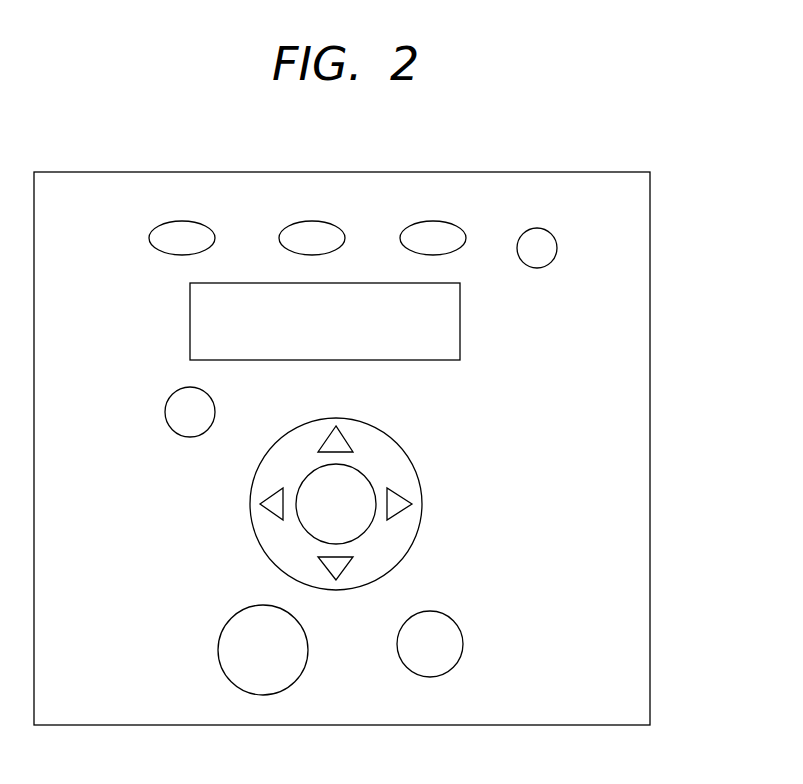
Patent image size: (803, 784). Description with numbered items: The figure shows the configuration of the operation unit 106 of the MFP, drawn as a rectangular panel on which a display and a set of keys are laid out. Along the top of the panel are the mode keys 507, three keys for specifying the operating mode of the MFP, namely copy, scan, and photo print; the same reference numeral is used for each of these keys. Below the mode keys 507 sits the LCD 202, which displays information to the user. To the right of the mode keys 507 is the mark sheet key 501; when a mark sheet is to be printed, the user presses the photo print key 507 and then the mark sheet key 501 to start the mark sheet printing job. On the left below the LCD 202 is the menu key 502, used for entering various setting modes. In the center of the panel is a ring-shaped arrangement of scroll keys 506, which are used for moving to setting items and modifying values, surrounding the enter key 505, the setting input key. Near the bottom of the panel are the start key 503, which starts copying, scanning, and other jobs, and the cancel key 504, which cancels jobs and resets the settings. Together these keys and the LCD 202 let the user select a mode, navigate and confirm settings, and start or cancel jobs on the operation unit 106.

The operation unit 106 is at (650, 393).
The mode keys 507 is at (467, 182).
The LCD 202 is at (190, 323).
The mark sheet key 501 is at (528, 268).
The menu key 502 is at (178, 433).
The start key 503 is at (220, 672).
The cancel key 504 is at (402, 665).
The enter key 505 is at (300, 522).
The scroll keys 506 is at (378, 462).